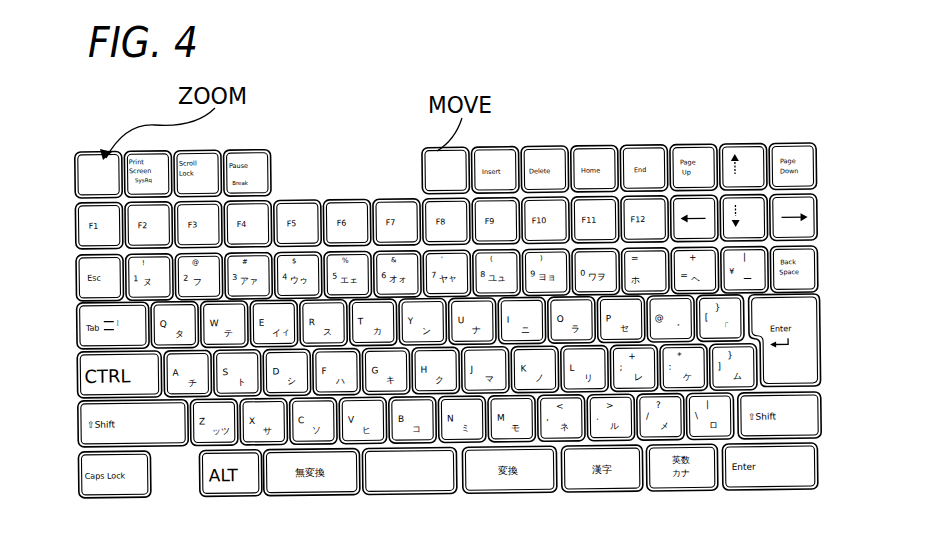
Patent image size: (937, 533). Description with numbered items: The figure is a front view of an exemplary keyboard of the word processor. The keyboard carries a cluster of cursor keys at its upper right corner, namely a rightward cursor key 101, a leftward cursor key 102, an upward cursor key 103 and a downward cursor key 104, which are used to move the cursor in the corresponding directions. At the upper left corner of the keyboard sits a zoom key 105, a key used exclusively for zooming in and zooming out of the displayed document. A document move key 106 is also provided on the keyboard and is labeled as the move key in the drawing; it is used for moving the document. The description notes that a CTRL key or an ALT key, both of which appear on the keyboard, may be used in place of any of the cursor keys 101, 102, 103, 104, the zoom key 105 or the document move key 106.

The rightward cursor key 101 is at (806, 216).
The leftward cursor key 102 is at (675, 207).
The upward cursor key 103 is at (752, 155).
The downward cursor key 104 is at (752, 222).
The zoom key 105 is at (75, 190).
The document move key 106 is at (422, 172).